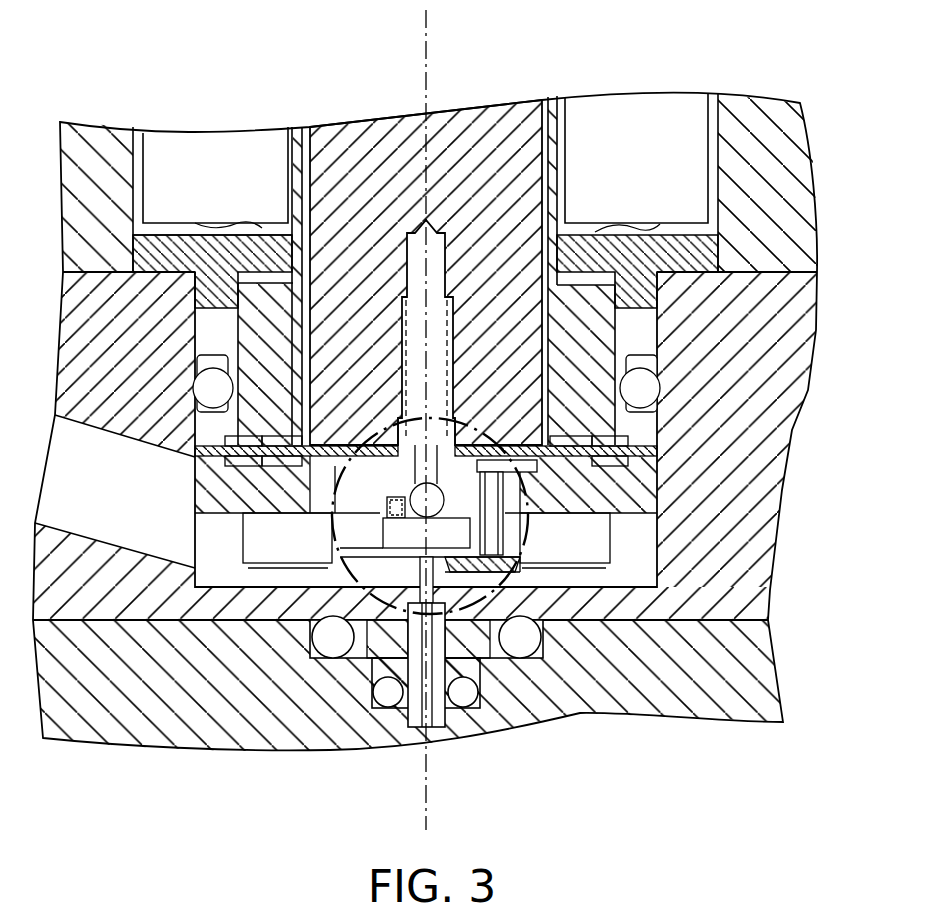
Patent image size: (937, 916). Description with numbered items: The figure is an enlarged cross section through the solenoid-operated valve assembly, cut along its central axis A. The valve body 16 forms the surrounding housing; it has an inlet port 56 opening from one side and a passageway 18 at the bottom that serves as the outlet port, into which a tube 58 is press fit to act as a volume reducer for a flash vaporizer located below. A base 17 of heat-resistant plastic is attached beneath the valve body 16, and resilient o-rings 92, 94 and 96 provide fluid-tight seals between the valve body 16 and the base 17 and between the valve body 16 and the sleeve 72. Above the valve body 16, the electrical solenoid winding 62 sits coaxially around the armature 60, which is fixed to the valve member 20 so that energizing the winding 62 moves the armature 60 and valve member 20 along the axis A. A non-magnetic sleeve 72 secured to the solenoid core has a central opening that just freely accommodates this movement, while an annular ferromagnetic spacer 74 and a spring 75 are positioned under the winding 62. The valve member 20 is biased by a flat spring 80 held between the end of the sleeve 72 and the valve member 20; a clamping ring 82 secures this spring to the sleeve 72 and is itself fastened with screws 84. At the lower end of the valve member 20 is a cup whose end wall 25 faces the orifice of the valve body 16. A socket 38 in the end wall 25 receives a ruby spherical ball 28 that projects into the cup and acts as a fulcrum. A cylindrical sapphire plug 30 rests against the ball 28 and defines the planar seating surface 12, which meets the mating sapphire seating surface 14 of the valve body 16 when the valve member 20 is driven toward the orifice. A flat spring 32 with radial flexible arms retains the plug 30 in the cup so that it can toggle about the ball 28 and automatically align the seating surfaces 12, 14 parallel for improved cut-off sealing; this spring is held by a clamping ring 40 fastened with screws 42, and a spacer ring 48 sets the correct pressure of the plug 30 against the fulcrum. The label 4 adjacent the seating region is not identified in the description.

The valve seat plate 4 is at (325, 602).
The seating surface 12 is at (413, 575).
The seating surface 14 is at (466, 533).
The valve body 16 is at (786, 482).
The base 17 is at (742, 710).
The passageway 18 is at (444, 574).
The valve member 20 is at (355, 502).
The end wall 25 is at (532, 488).
The spherical ball 28 is at (413, 492).
The plug 30 is at (480, 540).
The flat spring 32 is at (365, 546).
The socket 38 is at (421, 498).
The clamping ring 40 is at (558, 603).
The screws 42 is at (503, 594).
The spacer ring 48 is at (332, 553).
The inlet port 56 is at (106, 518).
The tube 58 is at (420, 722).
The armature 60 is at (353, 148).
The electrical solenoid winding 62 is at (598, 112).
The non-magnetic sleeve 72 is at (247, 382).
The annular ferromagnetic spacer 74 is at (704, 264).
The spring 75 is at (625, 218).
The flat spring 80 is at (590, 468).
The clamping ring 82 is at (186, 483).
The screws 84 is at (624, 547).
The o-ring 92 is at (352, 705).
The o-ring 94 is at (548, 668).
The o-ring 96 is at (662, 360).
The axis A is at (434, 60).